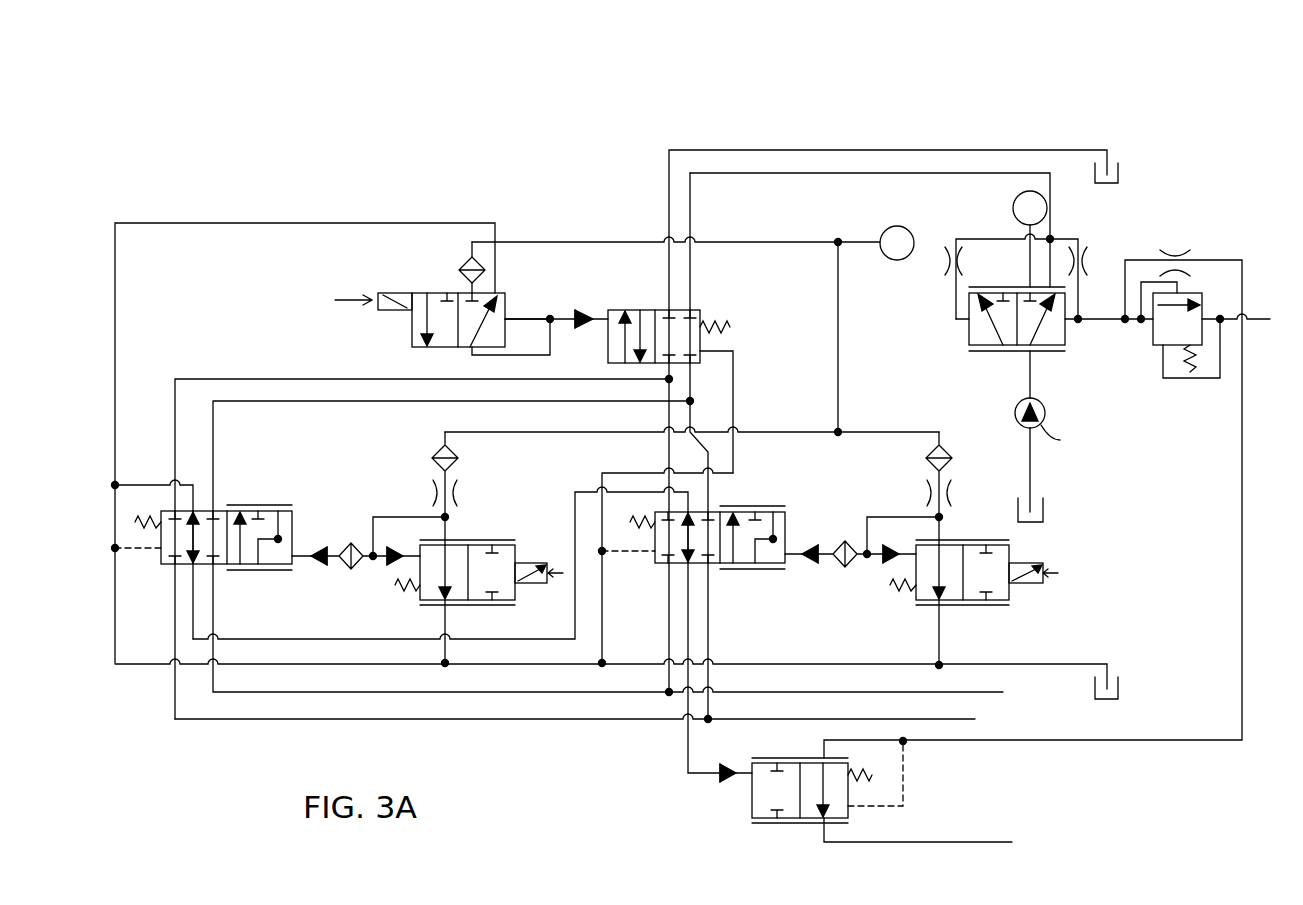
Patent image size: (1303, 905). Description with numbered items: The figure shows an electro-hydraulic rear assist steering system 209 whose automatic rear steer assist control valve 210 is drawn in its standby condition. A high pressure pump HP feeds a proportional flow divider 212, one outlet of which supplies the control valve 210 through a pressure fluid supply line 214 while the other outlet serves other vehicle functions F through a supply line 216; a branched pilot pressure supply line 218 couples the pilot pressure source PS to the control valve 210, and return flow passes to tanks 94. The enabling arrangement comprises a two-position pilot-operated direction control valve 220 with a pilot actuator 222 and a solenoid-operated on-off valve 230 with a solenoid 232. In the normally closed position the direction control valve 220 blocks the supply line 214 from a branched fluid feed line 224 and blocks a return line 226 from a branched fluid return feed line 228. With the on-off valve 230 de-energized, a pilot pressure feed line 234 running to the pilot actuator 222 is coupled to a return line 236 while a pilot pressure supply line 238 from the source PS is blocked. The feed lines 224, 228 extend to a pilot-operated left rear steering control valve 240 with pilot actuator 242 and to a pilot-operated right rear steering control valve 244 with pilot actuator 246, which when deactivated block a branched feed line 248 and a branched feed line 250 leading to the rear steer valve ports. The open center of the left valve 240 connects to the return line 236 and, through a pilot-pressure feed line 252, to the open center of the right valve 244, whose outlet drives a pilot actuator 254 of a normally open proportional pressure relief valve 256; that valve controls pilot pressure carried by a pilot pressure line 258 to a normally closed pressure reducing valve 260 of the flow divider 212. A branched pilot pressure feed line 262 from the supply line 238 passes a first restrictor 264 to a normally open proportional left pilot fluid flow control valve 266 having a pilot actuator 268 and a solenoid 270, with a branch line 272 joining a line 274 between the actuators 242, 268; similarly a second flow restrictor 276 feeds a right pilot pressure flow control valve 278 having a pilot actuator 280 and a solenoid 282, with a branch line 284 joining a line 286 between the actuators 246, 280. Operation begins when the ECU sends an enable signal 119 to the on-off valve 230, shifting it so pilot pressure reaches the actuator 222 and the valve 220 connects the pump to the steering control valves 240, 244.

The electro-hydraulic rear assist steering system 209 is at (1091, 797).
The automatic rear steer assist control valve 210 is at (643, 118).
The proportional flow divider 212 is at (1026, 366).
The pressure fluid supply line 214 is at (757, 173).
The supply line 216 is at (1029, 266).
The branched pilot pressure supply line 218 is at (848, 242).
The direction control valve 220 is at (635, 306).
The pilot actuator 222 is at (606, 328).
The branched fluid feed line 224 is at (691, 372).
The return line 226 is at (752, 150).
The branched fluid return feed line 228 is at (190, 379).
The on-off valve 230 is at (440, 293).
The solenoid 232 is at (392, 312).
The pilot pressure feed line 234 is at (538, 306).
The return line 236 is at (272, 223).
The pilot pressure supply line 238 is at (525, 242).
The left rear steering control valve 240 is at (246, 494).
The pilot actuator 242 is at (297, 570).
The right rear steering control valve 244 is at (739, 494).
The pilot actuator 246 is at (803, 570).
The branched feed line 248 is at (344, 692).
The branched feed line 250 is at (385, 719).
The pilot-pressure feed line 252 is at (558, 639).
The pilot actuator 254 is at (738, 785).
The proportional pressure relief valve 256 is at (776, 833).
The pilot pressure line 258 is at (1212, 740).
The pressure reducing valve 260 is at (1218, 395).
The branched pilot pressure feed line 262 is at (800, 432).
The first restrictor 264 is at (453, 485).
The left pilot fluid flow control valve 266 is at (422, 615).
The pilot actuator 268 is at (392, 545).
The solenoid 270 is at (548, 562).
The branch line 272 is at (372, 516).
The line 274 is at (325, 565).
The second flow restrictor 276 is at (946, 484).
The right pilot pressure flow control valve 278 is at (964, 619).
The pilot actuator 280 is at (881, 565).
The solenoid 282 is at (1040, 590).
The branch line 284 is at (866, 527).
The line 286 is at (833, 565).
The tank 94 is at (1120, 178).
The enable signal 119 is at (335, 301).